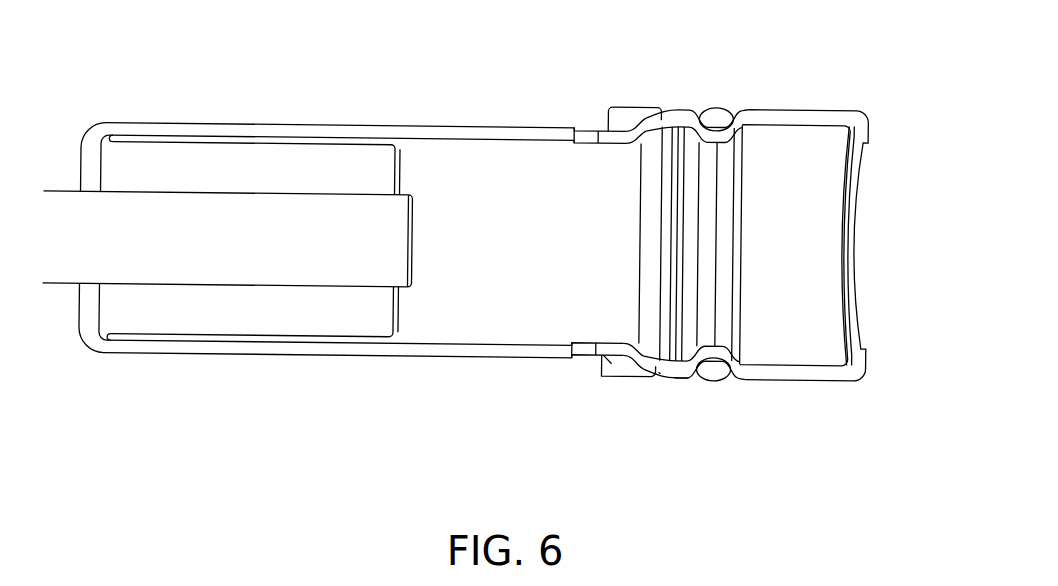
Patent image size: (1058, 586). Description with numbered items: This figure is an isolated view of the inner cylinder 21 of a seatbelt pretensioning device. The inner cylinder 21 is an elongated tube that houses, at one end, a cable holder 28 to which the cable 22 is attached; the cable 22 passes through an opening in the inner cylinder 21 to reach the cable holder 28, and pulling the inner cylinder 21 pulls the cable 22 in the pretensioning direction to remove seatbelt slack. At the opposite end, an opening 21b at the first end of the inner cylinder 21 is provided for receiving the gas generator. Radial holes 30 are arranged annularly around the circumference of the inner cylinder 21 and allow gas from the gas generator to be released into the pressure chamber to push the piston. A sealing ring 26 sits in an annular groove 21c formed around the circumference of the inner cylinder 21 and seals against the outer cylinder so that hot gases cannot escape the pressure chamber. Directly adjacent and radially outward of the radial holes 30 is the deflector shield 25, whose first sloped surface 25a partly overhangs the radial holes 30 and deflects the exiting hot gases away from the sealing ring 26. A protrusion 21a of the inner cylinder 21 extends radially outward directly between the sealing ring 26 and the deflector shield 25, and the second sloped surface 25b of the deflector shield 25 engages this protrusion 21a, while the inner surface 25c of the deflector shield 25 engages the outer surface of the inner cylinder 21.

The inner cylinder 21 is at (226, 352).
The protrusion 21a is at (677, 377).
The opening 21b is at (858, 157).
The annular groove 21c is at (710, 350).
The cable 22 is at (197, 254).
The deflector shield 25 is at (585, 254).
The first sloped surface 25a is at (622, 130).
The second sloped surface 25b is at (653, 366).
The inner surface 25c is at (632, 358).
The sealing ring 26 is at (716, 110).
The cable holder 28 is at (300, 166).
The radial holes 30 is at (574, 128).